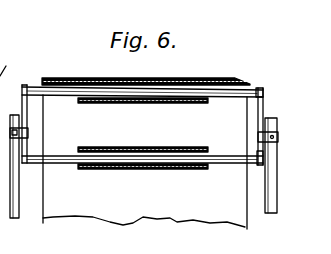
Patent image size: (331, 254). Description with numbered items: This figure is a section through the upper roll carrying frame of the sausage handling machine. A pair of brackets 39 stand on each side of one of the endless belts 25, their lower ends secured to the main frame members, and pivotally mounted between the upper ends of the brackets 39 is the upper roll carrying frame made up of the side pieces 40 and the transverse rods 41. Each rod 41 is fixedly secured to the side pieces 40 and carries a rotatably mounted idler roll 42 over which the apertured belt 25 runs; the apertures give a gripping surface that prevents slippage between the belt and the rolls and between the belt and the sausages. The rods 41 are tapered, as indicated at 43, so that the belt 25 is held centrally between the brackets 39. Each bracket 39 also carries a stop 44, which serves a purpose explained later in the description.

The endless belt 25 is at (55, 215).
The bracket 39 is at (13, 188).
The side piece 40 is at (22, 94).
The transverse rod 41 is at (188, 92).
The idler roll 42 is at (128, 147).
The tapered portion of rod 43 is at (250, 92).
The stop 44 is at (278, 137).